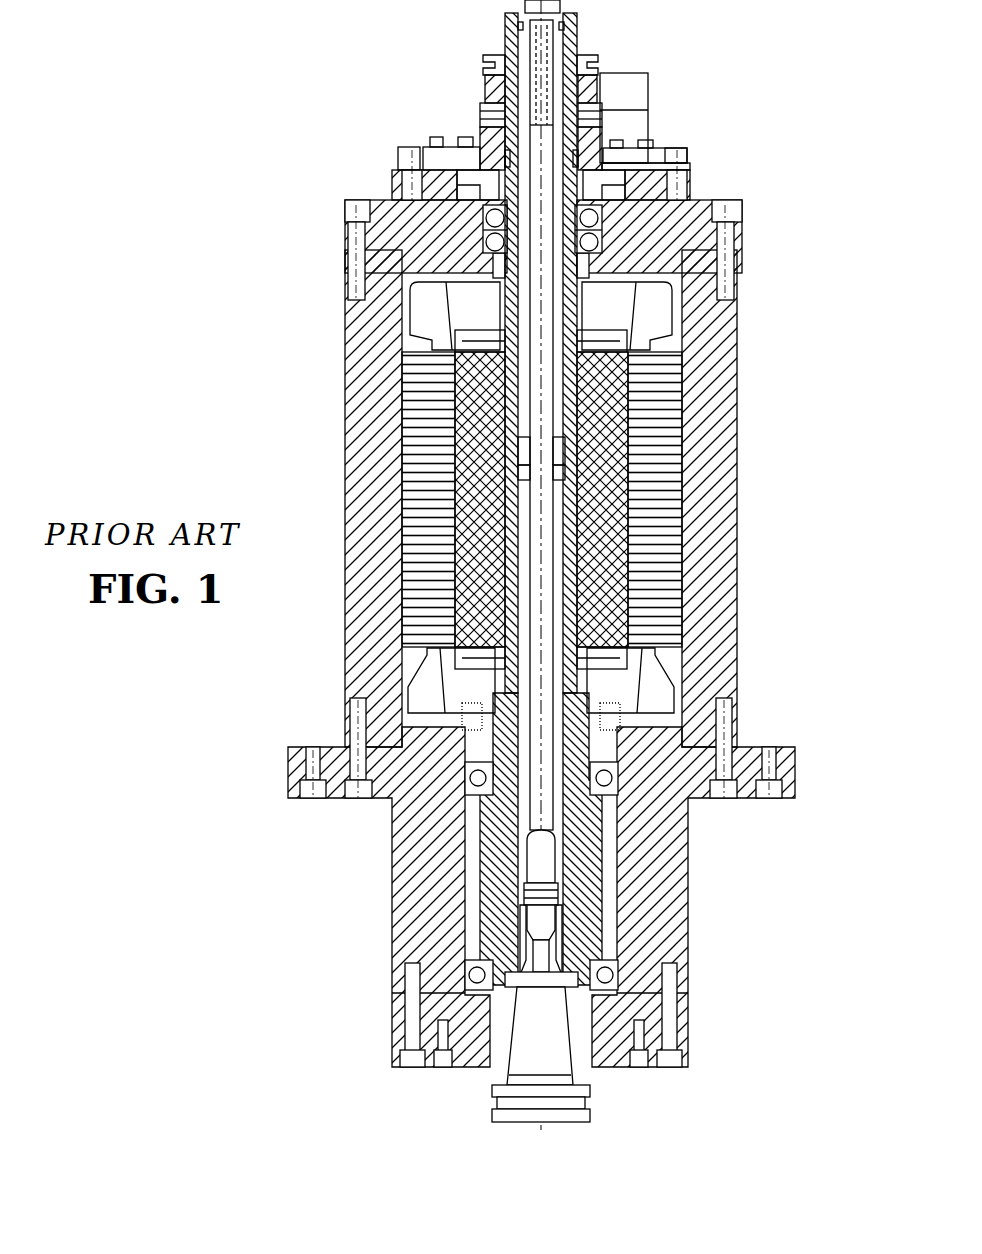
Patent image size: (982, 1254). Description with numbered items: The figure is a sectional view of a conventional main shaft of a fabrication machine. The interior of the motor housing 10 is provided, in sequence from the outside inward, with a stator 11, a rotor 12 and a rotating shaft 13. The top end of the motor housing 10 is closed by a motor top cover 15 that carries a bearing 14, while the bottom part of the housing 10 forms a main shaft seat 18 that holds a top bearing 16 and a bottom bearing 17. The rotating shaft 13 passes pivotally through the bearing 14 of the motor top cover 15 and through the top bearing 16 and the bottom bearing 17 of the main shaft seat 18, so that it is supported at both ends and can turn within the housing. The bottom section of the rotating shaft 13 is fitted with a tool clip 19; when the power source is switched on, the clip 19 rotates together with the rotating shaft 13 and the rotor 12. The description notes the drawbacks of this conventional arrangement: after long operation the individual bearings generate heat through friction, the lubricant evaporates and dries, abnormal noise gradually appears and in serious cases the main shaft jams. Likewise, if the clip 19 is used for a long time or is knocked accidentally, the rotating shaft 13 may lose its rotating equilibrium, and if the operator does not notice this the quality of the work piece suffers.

The motor housing 10 is at (713, 368).
The stator 11 is at (672, 492).
The rotor 12 is at (612, 588).
The rotating shaft 13 is at (507, 858).
The bearing 14 is at (592, 220).
The motor top cover 15 is at (677, 235).
The top bearing 16 is at (617, 787).
The bottom bearing 17 is at (610, 977).
The main shaft seat 18 is at (667, 905).
The tool clip 19 is at (492, 1112).